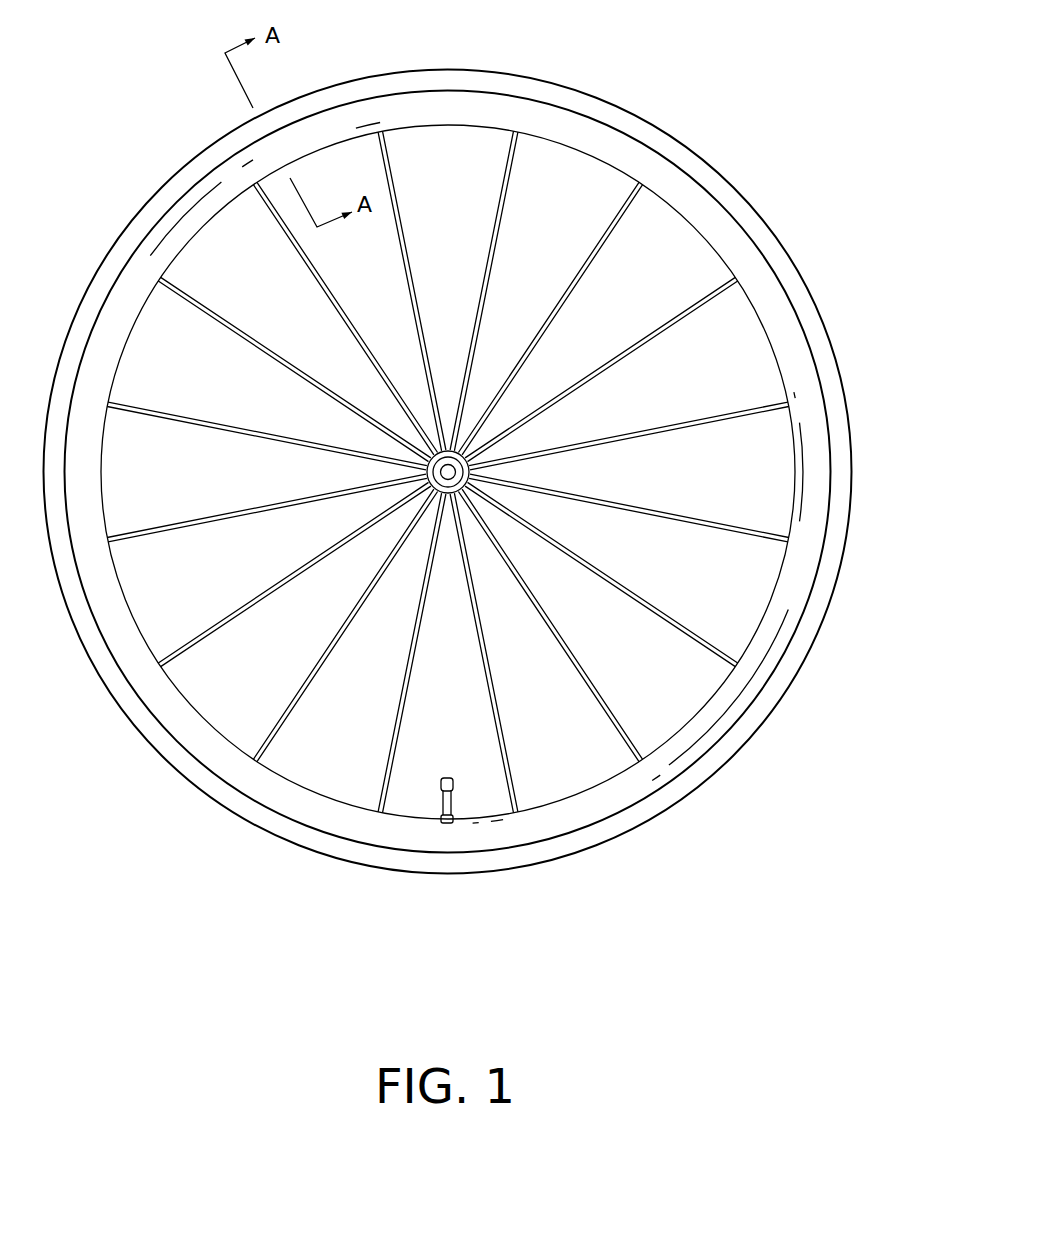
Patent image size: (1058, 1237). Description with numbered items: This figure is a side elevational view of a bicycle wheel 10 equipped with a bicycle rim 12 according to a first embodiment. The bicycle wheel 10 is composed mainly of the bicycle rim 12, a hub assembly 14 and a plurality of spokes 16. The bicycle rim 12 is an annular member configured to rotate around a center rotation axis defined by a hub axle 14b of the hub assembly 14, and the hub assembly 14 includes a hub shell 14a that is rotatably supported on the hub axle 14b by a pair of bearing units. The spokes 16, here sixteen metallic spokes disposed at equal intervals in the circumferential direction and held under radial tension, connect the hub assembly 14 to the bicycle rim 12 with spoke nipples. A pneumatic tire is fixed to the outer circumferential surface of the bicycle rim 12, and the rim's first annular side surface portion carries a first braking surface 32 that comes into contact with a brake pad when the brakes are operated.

The bicycle wheel 10 is at (448, 463).
The bicycle rim 12 is at (770, 345).
The hub assembly 14 is at (447, 475).
The hub shell 14a is at (440, 472).
The hub axle 14b is at (452, 470).
The spokes 16 is at (591, 681).
The first braking surface 32 is at (158, 755).